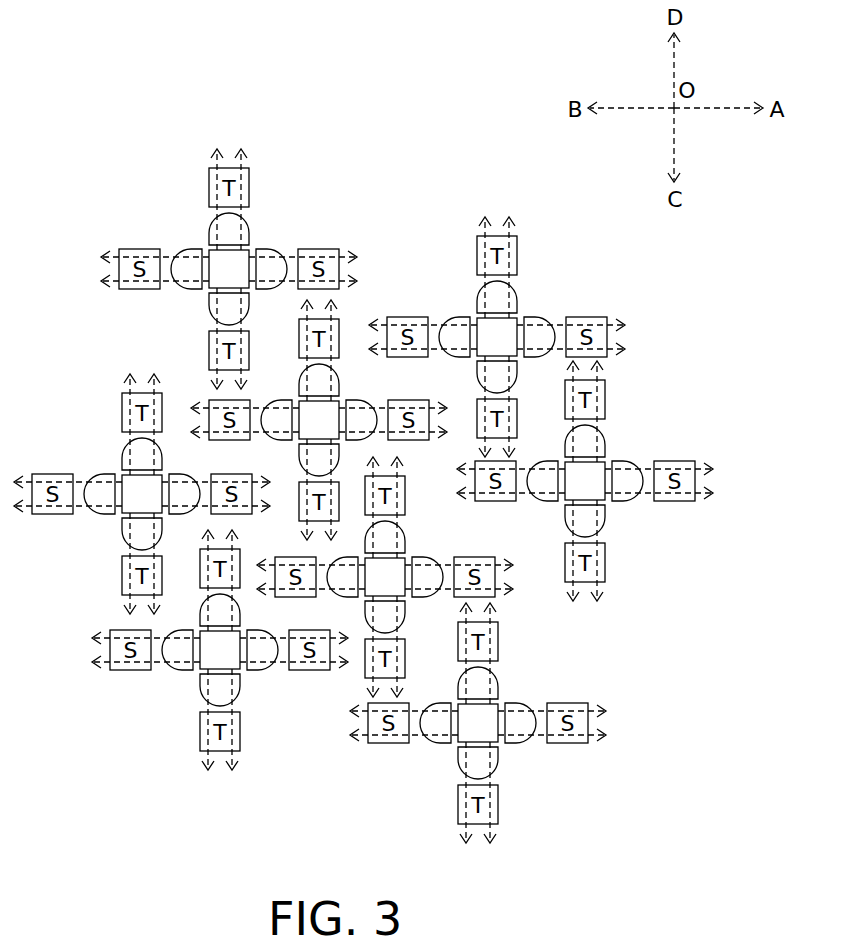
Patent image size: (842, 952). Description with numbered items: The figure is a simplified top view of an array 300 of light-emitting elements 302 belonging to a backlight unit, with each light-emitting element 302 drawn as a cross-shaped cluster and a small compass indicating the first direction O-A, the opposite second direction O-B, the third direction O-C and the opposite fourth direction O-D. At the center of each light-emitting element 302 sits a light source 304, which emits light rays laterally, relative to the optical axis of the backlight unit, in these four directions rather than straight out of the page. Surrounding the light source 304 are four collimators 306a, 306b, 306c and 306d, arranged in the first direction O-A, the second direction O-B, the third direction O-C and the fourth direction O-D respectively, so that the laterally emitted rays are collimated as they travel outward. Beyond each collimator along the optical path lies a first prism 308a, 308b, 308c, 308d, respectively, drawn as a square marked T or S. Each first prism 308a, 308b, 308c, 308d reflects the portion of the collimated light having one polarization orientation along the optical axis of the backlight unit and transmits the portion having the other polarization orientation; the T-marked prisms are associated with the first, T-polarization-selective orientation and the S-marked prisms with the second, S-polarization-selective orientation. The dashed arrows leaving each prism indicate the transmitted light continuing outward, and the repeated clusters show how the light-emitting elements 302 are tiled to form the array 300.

The array of light-emitting elements 300 is at (119, 91).
The light-emitting element 302 is at (638, 427).
The light source 304 is at (323, 213).
The collimator 306a is at (329, 240).
The collimator 306b is at (161, 218).
The collimator 306c is at (168, 310).
The collimator 306d is at (288, 193).
The first prism 308a is at (405, 231).
The first prism 308b is at (107, 229).
The first prism 308c is at (159, 350).
The first prism 308d is at (266, 141).